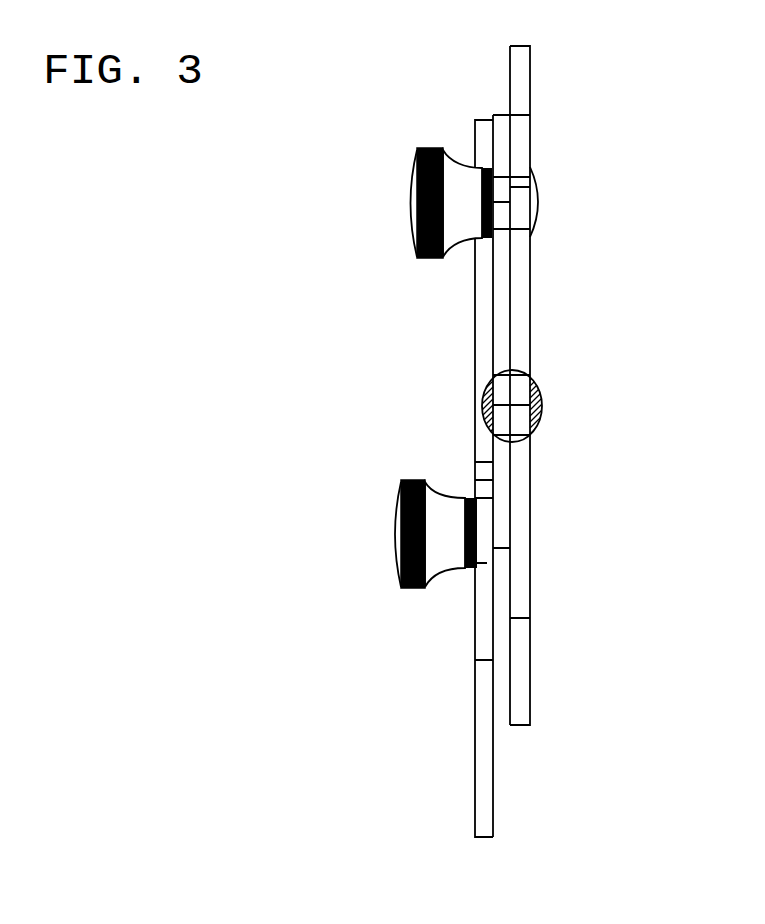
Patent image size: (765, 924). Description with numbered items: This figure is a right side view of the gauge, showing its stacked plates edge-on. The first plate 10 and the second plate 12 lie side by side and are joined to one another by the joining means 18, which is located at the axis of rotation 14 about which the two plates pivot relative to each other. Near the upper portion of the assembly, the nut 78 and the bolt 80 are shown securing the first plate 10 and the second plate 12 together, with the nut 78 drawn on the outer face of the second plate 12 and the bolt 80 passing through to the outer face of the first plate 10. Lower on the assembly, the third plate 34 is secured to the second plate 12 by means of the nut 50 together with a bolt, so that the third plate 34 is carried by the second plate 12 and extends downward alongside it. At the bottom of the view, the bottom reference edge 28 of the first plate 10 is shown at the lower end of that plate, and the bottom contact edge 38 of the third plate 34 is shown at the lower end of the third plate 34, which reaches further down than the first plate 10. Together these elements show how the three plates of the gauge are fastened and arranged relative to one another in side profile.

The first plate 10 is at (523, 563).
The second plate 12 is at (506, 328).
The axis of rotation 14 is at (548, 385).
The joining means 18 is at (545, 417).
The bottom reference edge 28 is at (520, 730).
The third plate 34 is at (487, 625).
The bottom contact edge 38 is at (483, 838).
The nut 50 is at (407, 473).
The nut 78 is at (407, 200).
The bolt 80 is at (552, 195).